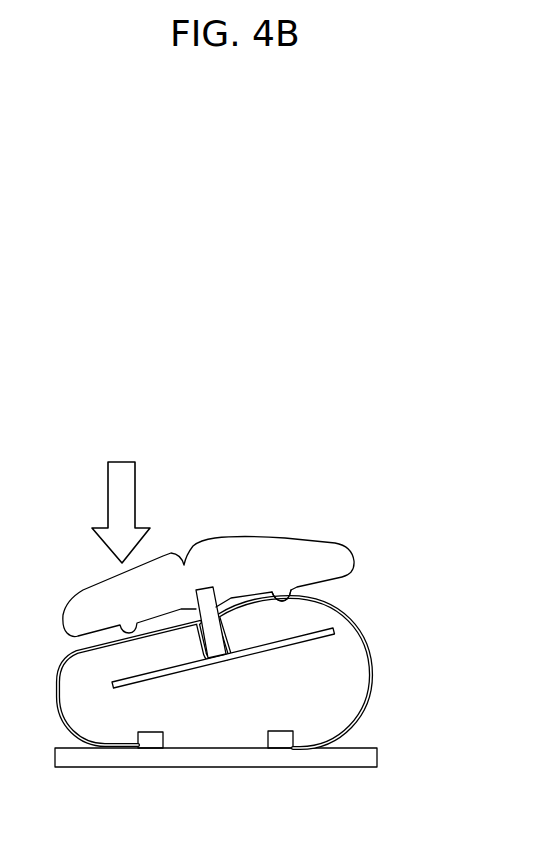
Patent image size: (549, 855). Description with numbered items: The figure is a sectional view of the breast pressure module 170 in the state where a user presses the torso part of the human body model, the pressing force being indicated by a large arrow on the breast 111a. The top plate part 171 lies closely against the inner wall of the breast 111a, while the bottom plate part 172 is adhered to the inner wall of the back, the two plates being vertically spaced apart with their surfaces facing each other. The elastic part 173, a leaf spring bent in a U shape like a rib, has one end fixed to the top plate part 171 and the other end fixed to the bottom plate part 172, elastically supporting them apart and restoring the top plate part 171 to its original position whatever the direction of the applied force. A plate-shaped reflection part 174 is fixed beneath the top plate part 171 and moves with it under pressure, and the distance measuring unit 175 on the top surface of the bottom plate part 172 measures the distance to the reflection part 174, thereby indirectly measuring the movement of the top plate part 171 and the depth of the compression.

The breast pressure module 170 is at (353, 442).
The breast 111a is at (220, 553).
The top plate part 171 is at (287, 585).
The bottom plate part 172 is at (237, 760).
The elastic part 173 is at (343, 611).
The reflection part 174 is at (318, 643).
The distance measuring unit 175 is at (148, 740).